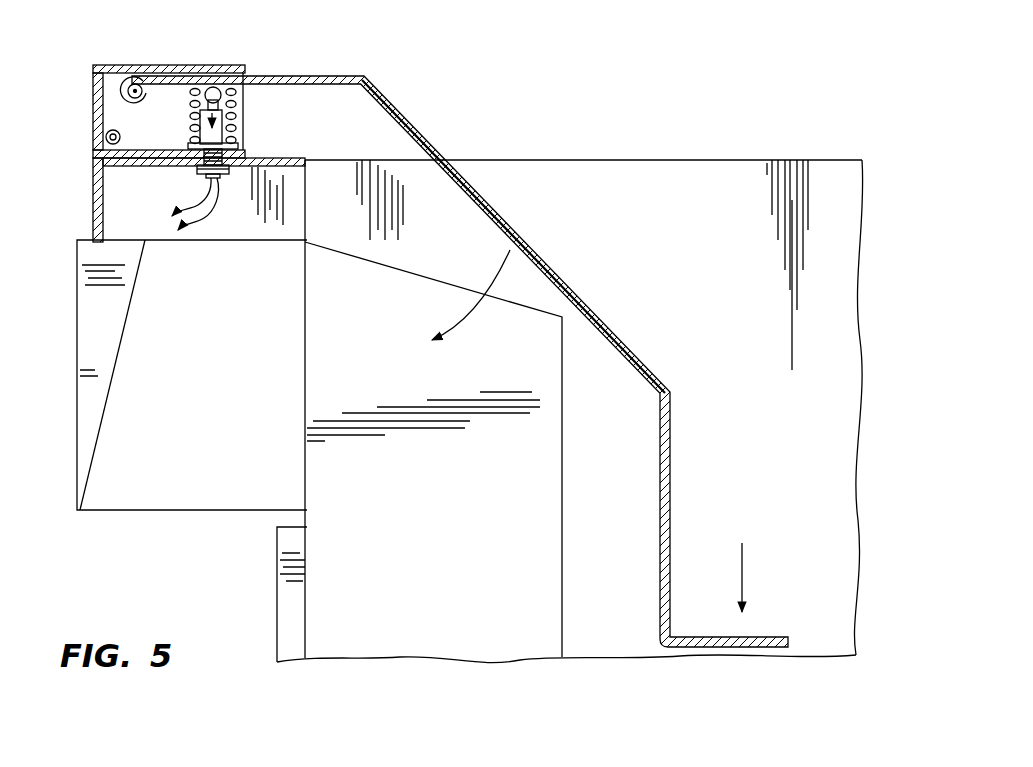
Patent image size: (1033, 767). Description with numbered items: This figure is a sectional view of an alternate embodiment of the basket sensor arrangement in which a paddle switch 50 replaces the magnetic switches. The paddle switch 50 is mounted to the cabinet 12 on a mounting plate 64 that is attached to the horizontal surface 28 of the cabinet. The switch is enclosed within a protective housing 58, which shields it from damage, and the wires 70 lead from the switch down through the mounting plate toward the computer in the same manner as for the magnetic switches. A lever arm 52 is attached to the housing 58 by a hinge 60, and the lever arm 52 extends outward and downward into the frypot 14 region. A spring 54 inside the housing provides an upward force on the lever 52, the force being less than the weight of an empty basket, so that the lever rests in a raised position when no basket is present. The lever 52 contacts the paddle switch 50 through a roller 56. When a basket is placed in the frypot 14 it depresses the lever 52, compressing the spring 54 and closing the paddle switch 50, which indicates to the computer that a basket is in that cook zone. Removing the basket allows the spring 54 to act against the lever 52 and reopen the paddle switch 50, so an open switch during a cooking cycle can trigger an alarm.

The cabinet 12 is at (270, 560).
The frypot 14 is at (697, 172).
The horizontal surface 28 is at (82, 230).
The paddle switch 50 is at (238, 133).
The lever arm 52 is at (428, 127).
The spring 54 is at (246, 98).
The roller 56 is at (190, 99).
The protective housing 58 is at (171, 63).
The hinge 60 is at (122, 106).
The mounting plate 64 is at (88, 187).
The wires 70 is at (180, 200).